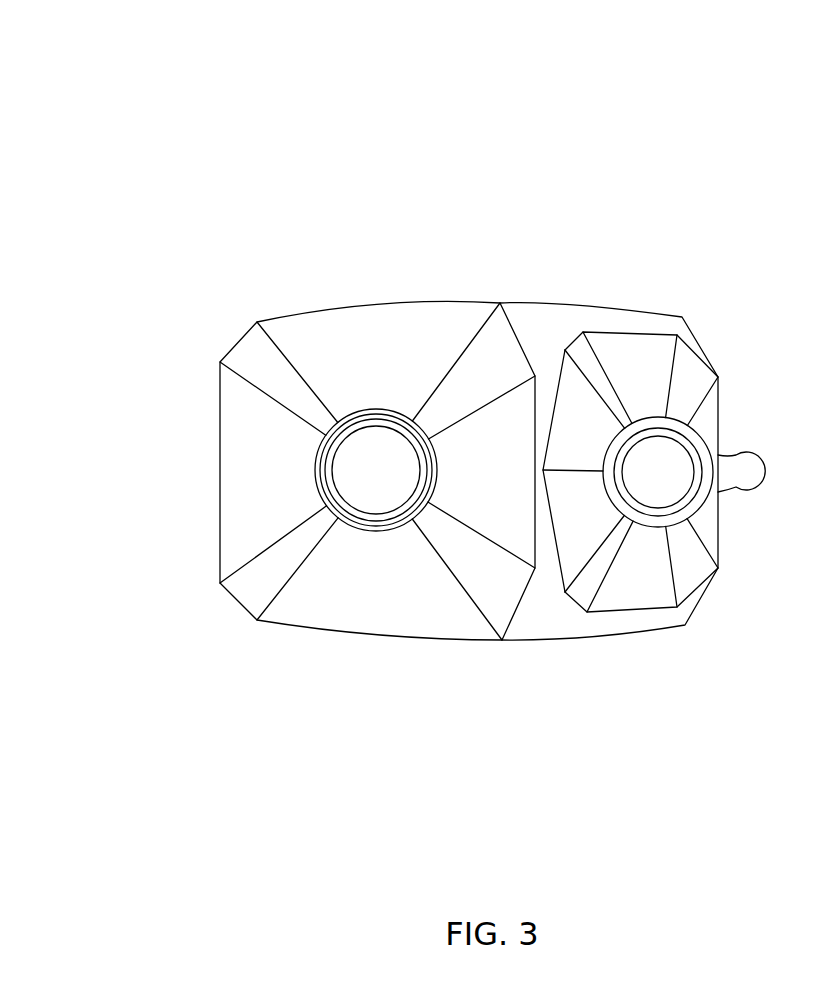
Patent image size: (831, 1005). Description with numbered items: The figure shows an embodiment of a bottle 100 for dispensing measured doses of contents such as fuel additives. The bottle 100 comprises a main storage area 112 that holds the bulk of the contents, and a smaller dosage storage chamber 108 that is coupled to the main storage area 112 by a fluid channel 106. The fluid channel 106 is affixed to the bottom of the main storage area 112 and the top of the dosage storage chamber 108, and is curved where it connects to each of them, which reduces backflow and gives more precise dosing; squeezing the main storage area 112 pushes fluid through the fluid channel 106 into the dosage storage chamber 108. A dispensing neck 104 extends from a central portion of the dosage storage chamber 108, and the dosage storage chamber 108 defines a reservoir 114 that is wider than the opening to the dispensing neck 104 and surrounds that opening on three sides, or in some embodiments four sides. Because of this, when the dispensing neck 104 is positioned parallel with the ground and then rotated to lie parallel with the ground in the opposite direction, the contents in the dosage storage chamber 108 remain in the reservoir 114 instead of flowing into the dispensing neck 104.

The bottle 100 is at (53, 51).
The dispensing neck 104 is at (718, 504).
The fluid channel 106 is at (753, 431).
The dosage storage chamber 108 is at (624, 345).
The main storage area 112 is at (389, 606).
The reservoir 114 is at (569, 516).